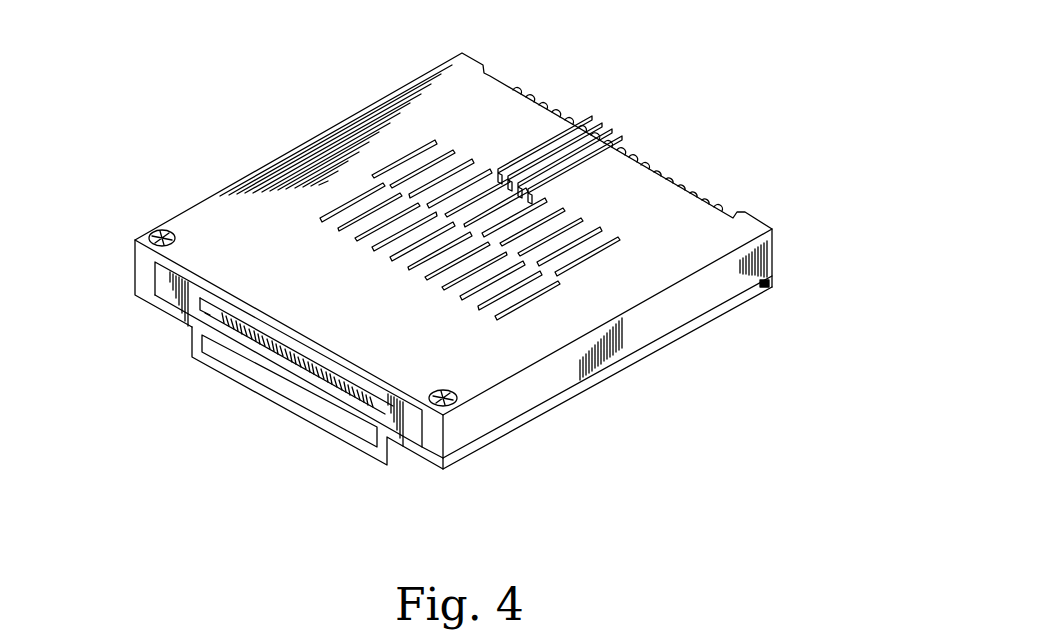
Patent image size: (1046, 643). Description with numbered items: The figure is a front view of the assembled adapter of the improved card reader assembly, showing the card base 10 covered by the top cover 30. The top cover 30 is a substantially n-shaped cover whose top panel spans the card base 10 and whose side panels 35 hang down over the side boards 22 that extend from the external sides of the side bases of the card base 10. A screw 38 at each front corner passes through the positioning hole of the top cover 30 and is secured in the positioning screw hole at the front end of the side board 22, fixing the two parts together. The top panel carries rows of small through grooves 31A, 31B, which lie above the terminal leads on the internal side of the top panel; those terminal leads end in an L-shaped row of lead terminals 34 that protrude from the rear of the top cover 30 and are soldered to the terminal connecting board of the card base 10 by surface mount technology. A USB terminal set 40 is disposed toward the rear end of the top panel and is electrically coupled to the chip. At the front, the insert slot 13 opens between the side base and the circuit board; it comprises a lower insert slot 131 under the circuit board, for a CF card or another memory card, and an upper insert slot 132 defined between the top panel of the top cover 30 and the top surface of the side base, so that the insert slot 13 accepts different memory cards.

The card base 10 is at (427, 467).
The insert slot 13 is at (247, 343).
The insert slot 131 is at (333, 417).
The insert slot 132 is at (181, 277).
The side board 22 is at (612, 373).
The top cover 30 is at (760, 200).
The small through grooves 31A is at (562, 268).
The small through grooves 31B is at (500, 317).
The lead terminals 34 is at (647, 167).
The side panel 35 is at (543, 390).
The screw 38 is at (162, 232).
The USB terminal set 40 is at (557, 140).